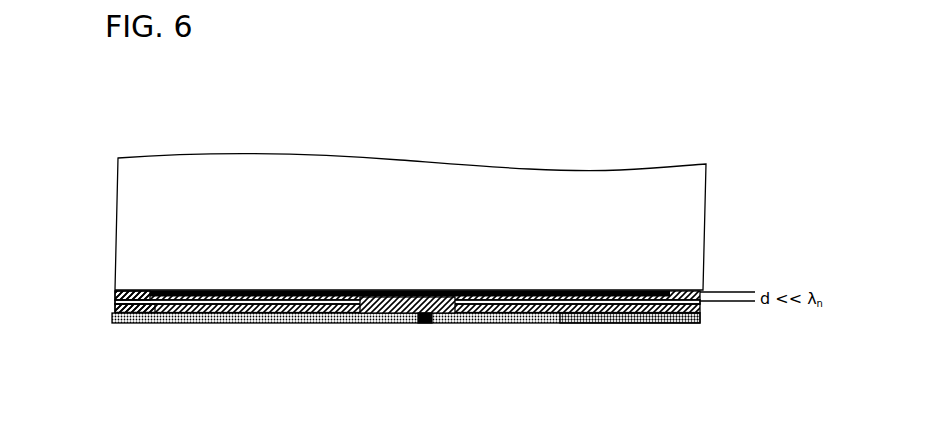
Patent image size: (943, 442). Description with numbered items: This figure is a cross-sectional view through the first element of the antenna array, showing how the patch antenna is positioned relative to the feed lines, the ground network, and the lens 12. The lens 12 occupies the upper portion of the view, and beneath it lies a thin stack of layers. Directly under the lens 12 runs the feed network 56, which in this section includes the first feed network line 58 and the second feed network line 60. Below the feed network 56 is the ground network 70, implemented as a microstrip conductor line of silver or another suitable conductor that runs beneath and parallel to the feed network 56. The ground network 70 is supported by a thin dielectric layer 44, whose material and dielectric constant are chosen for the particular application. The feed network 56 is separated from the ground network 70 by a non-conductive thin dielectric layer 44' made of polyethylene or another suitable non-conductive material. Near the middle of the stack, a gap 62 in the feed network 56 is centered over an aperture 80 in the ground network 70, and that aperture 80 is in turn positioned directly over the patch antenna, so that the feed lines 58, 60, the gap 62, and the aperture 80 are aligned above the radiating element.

The lens 12 is at (602, 228).
The dielectric layer 44 is at (110, 266).
The non-conductive thin dielectric layer 44' is at (133, 343).
The feed network 56 is at (703, 318).
The first feed network line 58 is at (305, 323).
The second feed network line 60 is at (626, 323).
The gap 62 is at (411, 323).
The ground network 70 is at (112, 305).
The aperture 80 is at (435, 323).